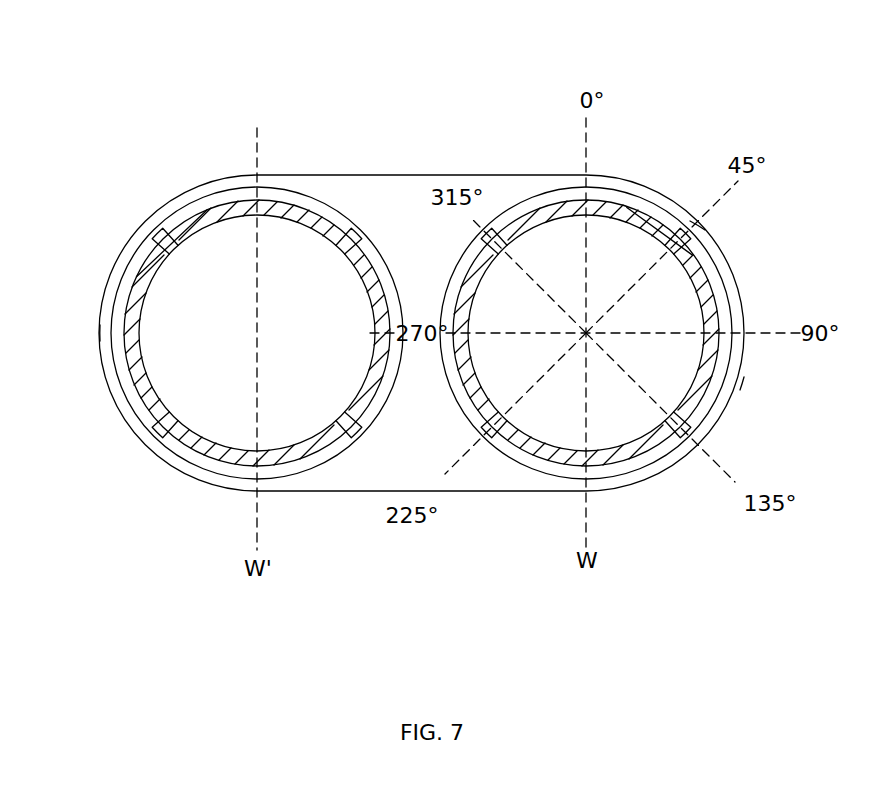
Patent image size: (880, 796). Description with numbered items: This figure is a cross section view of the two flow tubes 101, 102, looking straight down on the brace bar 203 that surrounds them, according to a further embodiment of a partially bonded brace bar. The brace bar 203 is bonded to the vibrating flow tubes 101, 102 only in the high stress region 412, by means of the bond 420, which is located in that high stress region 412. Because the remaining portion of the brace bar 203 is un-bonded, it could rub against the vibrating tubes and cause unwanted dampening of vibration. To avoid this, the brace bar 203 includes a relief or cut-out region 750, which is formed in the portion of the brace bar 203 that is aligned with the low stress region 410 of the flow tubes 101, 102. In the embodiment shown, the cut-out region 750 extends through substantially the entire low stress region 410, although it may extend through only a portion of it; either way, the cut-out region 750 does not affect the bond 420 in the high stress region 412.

The flow tube 101 is at (343, 188).
The flow tube 102 is at (498, 188).
The brace bar 203 is at (712, 228).
The low stress region 410 is at (268, 177).
The high stress region 412 is at (95, 337).
The bond 420 is at (122, 300).
The cut-out region 750 is at (210, 197).